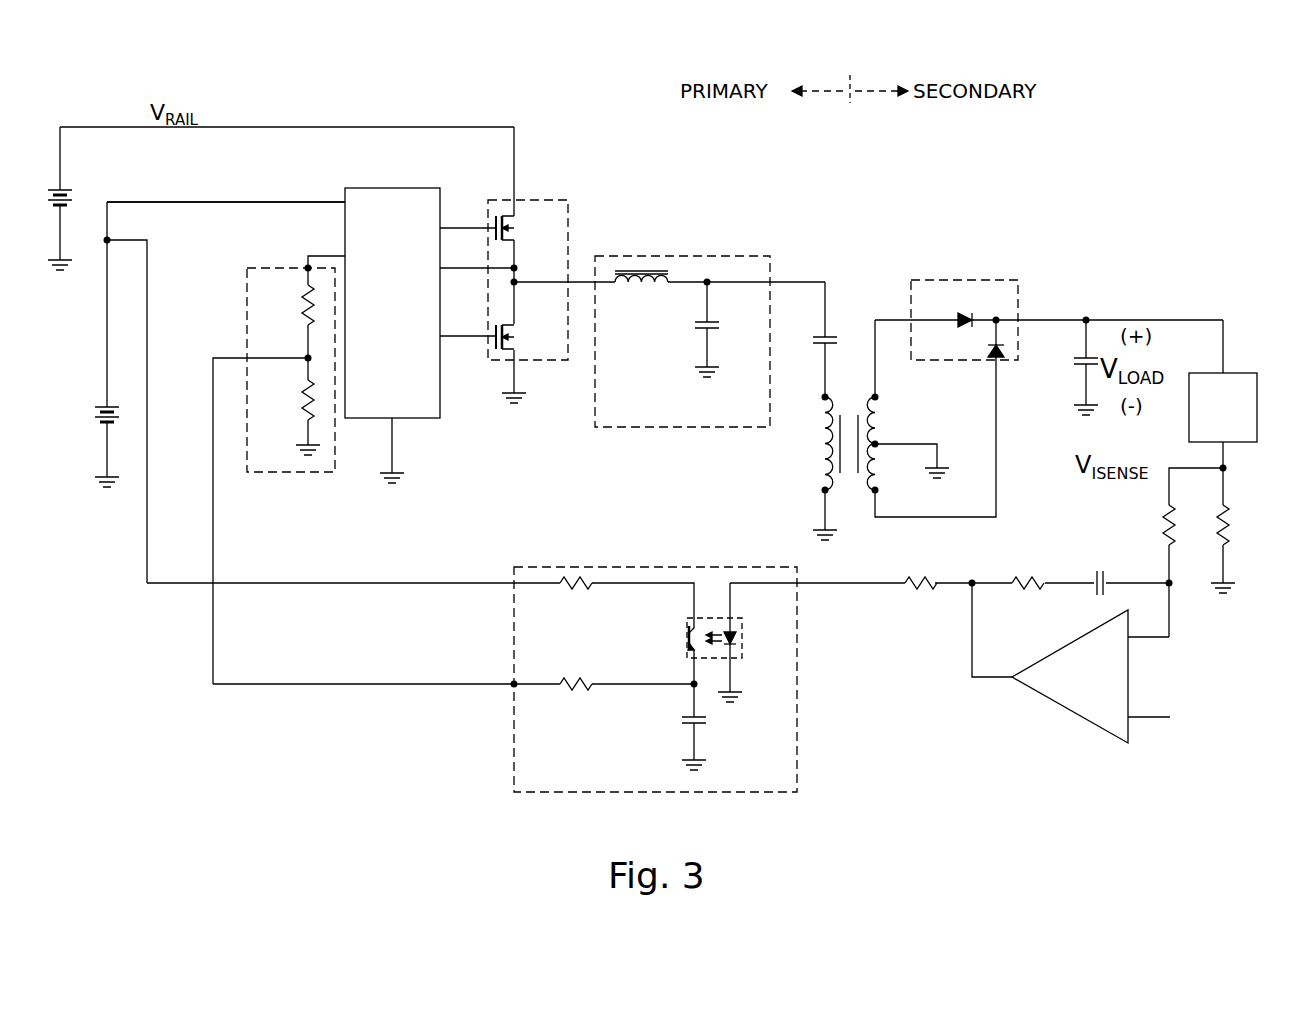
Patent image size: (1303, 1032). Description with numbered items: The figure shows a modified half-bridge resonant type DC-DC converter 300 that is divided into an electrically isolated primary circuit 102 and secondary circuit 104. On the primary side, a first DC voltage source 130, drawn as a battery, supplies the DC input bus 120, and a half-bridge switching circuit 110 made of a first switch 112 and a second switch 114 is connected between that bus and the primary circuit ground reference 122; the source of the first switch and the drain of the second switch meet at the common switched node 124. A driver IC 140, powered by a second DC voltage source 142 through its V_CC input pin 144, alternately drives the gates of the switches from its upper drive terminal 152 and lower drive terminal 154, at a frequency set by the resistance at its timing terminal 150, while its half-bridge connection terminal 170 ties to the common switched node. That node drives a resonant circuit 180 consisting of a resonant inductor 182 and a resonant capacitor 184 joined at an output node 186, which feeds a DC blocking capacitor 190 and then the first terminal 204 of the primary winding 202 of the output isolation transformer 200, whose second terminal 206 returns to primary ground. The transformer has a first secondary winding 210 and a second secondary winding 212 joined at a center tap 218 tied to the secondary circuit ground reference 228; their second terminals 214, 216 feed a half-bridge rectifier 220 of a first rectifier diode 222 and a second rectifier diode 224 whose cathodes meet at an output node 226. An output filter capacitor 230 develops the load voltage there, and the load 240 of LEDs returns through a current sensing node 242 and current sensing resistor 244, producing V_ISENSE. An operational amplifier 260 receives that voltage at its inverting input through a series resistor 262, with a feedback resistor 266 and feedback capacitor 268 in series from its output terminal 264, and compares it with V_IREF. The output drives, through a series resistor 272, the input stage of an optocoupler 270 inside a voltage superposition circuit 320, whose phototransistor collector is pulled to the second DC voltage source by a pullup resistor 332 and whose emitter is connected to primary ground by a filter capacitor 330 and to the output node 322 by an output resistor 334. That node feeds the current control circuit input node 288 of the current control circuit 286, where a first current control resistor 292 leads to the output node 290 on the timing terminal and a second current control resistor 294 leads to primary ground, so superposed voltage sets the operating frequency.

The primary circuit 102 is at (773, 188).
The secondary circuit 104 is at (928, 188).
The modified half-bridge resonant type DC-DC converter 300 is at (1130, 241).
The DC input bus 120 is at (280, 127).
The first DC voltage source 130 is at (60, 188).
The primary circuit ground reference 122 is at (64, 262).
The second DC voltage source 142 is at (105, 405).
The driver IC 140 is at (365, 188).
The V_CC input pin 144 is at (345, 200).
The timing terminal 150 is at (345, 262).
The upper drive terminal 152 is at (445, 228).
The half-bridge connection terminal 170 is at (445, 272).
The lower drive terminal 154 is at (445, 340).
The half-bridge switching circuit 110 is at (520, 200).
The first switch 112 is at (512, 236).
The second switch 114 is at (512, 345).
The common switched node 124 is at (516, 282).
The current control circuit 286 is at (292, 472).
The output node of the current control circuit 290 is at (305, 266).
The first current control resistor 292 is at (302, 316).
The current control circuit input node 288 is at (305, 356).
The second current control resistor 294 is at (302, 410).
The resonant circuit 180 is at (637, 256).
The resonant inductor 182 is at (632, 286).
The output node of the resonant circuit 186 is at (710, 286).
The resonant capacitor 184 is at (714, 328).
The DC blocking capacitor 190 is at (830, 335).
The output isolation transformer 200 is at (849, 494).
The first terminal of the primary winding 204 is at (822, 398).
The primary winding 202 is at (822, 442).
The second terminal of the primary winding 206 is at (822, 490).
The first secondary winding 210 is at (878, 440).
The second terminal of the first secondary winding 214 is at (876, 396).
The center tap 218 is at (878, 444).
The second secondary winding 212 is at (878, 462).
The second terminal of the second secondary winding 216 is at (878, 492).
The half-bridge rectifier 220 is at (963, 280).
The first rectifier diode 222 is at (955, 317).
The second rectifier diode 224 is at (992, 360).
The output node of the half-bridge rectifier 226 is at (1000, 318).
The output filter capacitor 230 is at (1076, 362).
The secondary circuit ground reference 228 is at (940, 470).
The load 240 is at (1236, 373).
The current sensing node 242 is at (1226, 470).
The current sensing resistor 244 is at (1228, 525).
The series resistor 262 is at (1163, 528).
The feedback capacitor 268 is at (1095, 575).
The feedback resistor 266 is at (1040, 590).
The series resistor 272 is at (934, 582).
The operational amplifier 260 is at (1070, 710).
The output terminal 264 is at (1008, 680).
The voltage superposition circuit 320 is at (637, 567).
The pullup resistor 332 is at (585, 590).
The output resistor 334 is at (585, 690).
The output node of the voltage superposition circuit 322 is at (512, 687).
The optocoupler 270 is at (686, 637).
The filter capacitor 330 is at (690, 722).